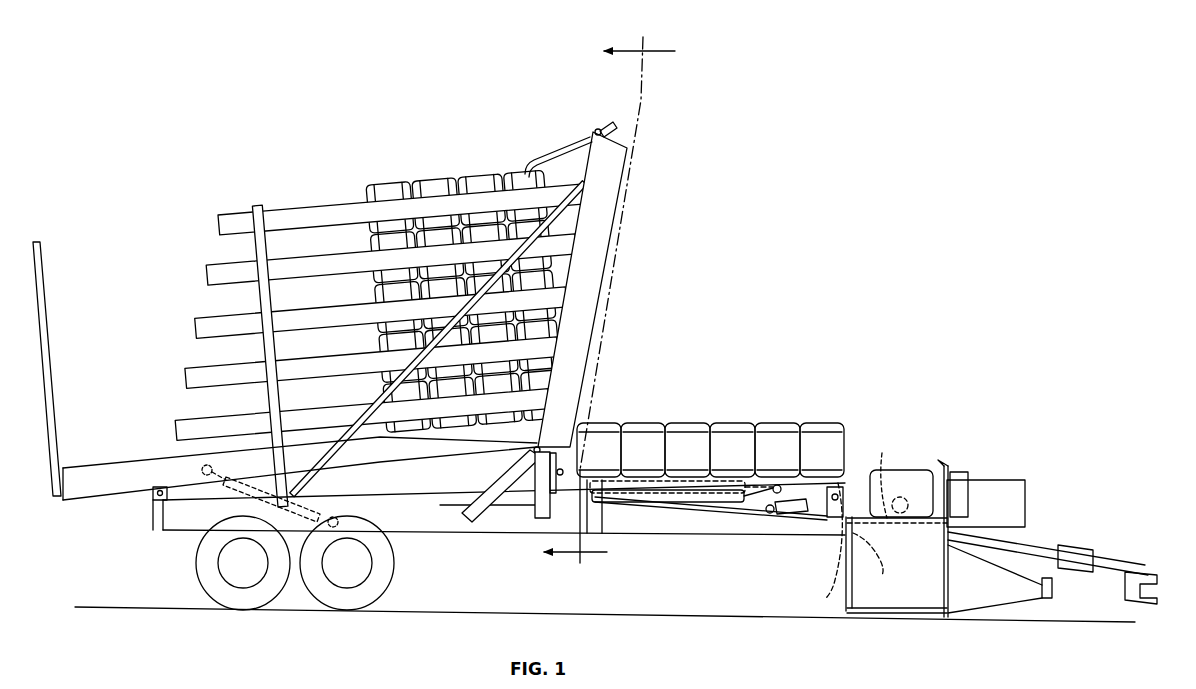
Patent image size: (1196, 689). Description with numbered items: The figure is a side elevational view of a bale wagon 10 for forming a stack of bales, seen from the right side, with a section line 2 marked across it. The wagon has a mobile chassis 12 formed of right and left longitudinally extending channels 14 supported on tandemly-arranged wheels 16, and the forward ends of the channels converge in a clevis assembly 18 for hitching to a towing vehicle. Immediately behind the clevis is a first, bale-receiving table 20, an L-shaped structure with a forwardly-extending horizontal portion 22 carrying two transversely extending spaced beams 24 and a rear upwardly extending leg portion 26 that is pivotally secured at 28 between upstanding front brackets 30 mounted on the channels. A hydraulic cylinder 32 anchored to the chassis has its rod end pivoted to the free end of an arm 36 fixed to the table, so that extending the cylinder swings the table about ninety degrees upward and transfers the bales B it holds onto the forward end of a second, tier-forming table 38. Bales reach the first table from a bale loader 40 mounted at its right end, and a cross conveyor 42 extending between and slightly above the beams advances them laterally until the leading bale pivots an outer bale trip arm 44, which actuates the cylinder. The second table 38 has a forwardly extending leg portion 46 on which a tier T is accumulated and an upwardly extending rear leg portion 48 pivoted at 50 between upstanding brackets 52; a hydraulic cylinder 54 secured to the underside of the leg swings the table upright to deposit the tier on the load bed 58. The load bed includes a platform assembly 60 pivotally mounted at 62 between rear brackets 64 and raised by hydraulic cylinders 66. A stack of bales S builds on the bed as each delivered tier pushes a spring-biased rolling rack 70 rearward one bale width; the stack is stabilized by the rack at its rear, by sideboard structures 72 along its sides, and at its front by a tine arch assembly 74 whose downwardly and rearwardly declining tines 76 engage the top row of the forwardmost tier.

The section line 2- 2 is at (609, 306).
The bale wagon 10 is at (694, 306).
The mobile chassis 12 is at (464, 541).
The longitudinally extending channels 14 is at (676, 538).
The wheels 16 is at (283, 600).
The clevis assembly 18 is at (1033, 544).
The first, bale-receiving table 20 is at (934, 534).
The forwardly-extending horizontal portion 22 is at (868, 559).
The transversely extending spaced beams 24 is at (923, 523).
The rear upwardly extending leg portion 26 is at (822, 547).
The pivot point 28 is at (848, 497).
The front brackets 30 is at (828, 487).
The hydraulic cylinder 32 is at (768, 512).
The arm 36 is at (795, 514).
The second, tier-forming table 38 is at (774, 492).
The bale loader 40 is at (1025, 605).
The cross conveyor 42 is at (894, 482).
The outer bale trip arm 44 is at (935, 459).
The forwardly extending leg portion 46 is at (632, 493).
The upwardly extending rear leg portion 48 is at (562, 473).
The pivot point 50 is at (532, 452).
The upstanding brackets 52 is at (552, 518).
The hydraulic cylinder 54 is at (708, 503).
The load bed 58 is at (73, 506).
The platform assembly 60 is at (143, 460).
The pivot 62 is at (152, 494).
The rear brackets 64 is at (150, 502).
The hydraulic cylinders 66 is at (310, 499).
The rolling rack 70 is at (366, 336).
The sideboard structures 72 is at (312, 205).
The tine arch assembly 74 is at (596, 128).
The tines 76 is at (546, 150).
The stack of bales S is at (441, 180).
The tier T is at (722, 420).
The bales B is at (908, 468).